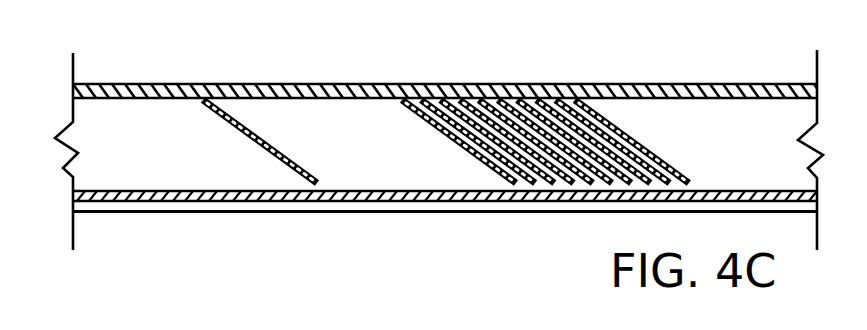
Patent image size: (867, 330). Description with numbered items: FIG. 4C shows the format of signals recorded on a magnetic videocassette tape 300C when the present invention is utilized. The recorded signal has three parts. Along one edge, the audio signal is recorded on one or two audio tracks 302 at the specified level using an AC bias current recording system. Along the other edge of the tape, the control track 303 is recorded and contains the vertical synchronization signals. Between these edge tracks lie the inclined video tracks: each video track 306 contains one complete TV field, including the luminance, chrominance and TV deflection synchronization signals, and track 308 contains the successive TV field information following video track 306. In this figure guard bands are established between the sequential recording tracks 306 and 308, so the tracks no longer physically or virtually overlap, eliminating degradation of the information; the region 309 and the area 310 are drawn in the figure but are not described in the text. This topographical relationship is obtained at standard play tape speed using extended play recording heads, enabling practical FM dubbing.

The tape 300C is at (439, 167).
The audio tracks 302 is at (382, 84).
The control track 303 is at (367, 205).
The video track 306 is at (455, 143).
The track 308 is at (445, 127).
The overlapping strips 309 is at (490, 167).
The channel space between plates 310 is at (170, 163).